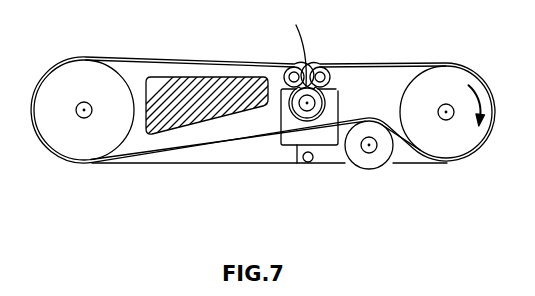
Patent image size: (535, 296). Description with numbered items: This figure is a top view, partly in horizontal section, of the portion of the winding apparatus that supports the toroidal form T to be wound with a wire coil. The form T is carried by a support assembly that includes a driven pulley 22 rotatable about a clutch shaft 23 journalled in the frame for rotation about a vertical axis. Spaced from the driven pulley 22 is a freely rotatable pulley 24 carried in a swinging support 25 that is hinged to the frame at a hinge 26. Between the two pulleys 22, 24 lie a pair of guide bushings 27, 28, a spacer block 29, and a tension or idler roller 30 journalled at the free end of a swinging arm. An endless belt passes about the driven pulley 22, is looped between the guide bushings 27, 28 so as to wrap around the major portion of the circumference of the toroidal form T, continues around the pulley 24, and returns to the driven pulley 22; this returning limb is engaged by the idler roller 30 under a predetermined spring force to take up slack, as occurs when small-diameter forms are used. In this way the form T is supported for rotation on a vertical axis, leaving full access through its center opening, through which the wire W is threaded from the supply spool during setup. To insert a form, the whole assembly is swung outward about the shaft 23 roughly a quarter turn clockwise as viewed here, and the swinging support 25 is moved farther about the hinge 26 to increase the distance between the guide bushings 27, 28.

The driven pulley 22 is at (108, 78).
The clutch shaft 23 is at (79, 104).
The freely rotatable pulley 24 is at (458, 83).
The swinging support 25 is at (412, 163).
The hinge 26 is at (308, 163).
The guide bushing 27 is at (284, 71).
The guide bushing 28 is at (320, 67).
The spacer block 29 is at (162, 130).
The tension or idler roller 30 is at (368, 170).
The toroidal form T is at (326, 88).
The wire W is at (294, 47).